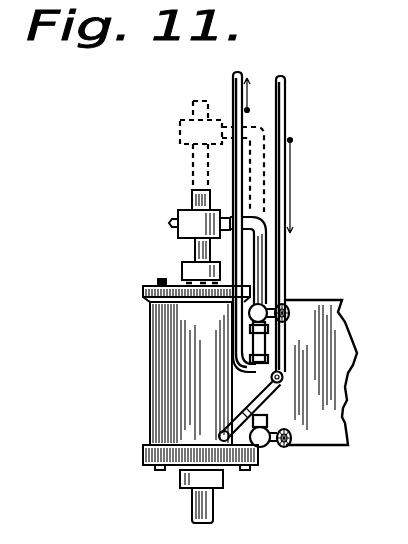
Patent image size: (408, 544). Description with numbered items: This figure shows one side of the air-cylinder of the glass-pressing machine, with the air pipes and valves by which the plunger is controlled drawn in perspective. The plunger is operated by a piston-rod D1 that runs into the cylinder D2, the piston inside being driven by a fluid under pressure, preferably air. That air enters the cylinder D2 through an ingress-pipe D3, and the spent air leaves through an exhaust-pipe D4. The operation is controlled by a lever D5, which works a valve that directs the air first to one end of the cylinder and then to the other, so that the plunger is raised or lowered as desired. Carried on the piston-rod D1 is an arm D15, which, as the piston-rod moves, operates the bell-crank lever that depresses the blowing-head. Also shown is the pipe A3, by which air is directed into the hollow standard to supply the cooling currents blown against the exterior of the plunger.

The piston-rod D1 is at (243, 508).
The cylinder D2 is at (168, 385).
The ingress-pipe D3 is at (285, 110).
The exhaust-pipe D4 is at (233, 88).
The lever D5 is at (265, 396).
The arm D15 is at (260, 263).
The pipe A3 is at (313, 310).